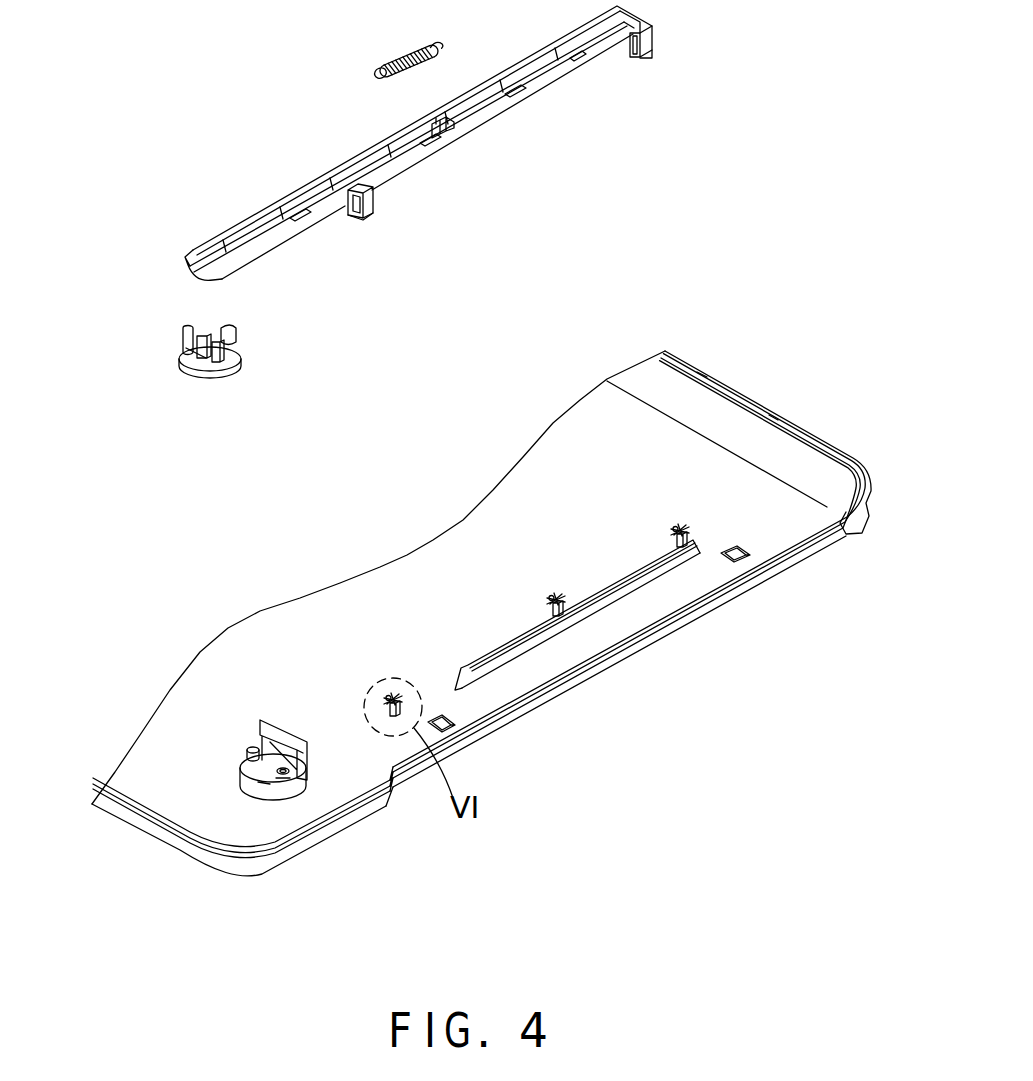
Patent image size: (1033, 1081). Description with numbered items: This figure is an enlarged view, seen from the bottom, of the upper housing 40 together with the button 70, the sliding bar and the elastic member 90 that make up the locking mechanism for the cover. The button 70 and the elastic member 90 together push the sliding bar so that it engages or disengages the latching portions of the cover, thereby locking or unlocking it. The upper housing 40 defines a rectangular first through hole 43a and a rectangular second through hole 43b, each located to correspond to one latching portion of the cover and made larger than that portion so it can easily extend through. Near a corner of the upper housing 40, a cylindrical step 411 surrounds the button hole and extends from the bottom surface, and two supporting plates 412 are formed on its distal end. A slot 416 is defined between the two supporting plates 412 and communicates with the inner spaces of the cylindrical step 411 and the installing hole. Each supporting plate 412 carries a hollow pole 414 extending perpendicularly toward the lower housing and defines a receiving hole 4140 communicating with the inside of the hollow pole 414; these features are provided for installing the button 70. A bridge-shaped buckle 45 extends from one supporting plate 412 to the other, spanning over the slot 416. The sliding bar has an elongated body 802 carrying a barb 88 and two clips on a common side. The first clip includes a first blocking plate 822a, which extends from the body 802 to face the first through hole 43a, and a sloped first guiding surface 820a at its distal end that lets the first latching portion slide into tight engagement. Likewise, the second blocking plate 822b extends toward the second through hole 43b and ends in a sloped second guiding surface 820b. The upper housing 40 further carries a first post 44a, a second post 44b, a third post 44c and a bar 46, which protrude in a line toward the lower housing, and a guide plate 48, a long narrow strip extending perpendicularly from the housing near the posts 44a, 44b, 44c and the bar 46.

The upper housing 40 is at (680, 447).
The cylindrical step 411 is at (266, 790).
The supporting plate 412 is at (242, 766).
The hollow pole 414 is at (280, 782).
The receiving hole 4140 is at (290, 782).
The slot 416 is at (250, 772).
The first through hole 43a is at (748, 561).
The second through hole 43b is at (470, 736).
The first post 44a is at (672, 533).
The second post 44b is at (550, 600).
The third post 44c is at (385, 690).
The buckle 45 is at (283, 738).
The bar 46 is at (487, 643).
The guide plate 48 is at (593, 603).
The button 70 is at (205, 375).
The elongated body 802 is at (528, 90).
The first guiding surface 820a is at (637, 62).
The second guiding surface 820b is at (362, 225).
The first blocking plate 822a is at (641, 40).
The second blocking plate 822b is at (345, 215).
The barb 88 is at (452, 132).
The elastic member 90 is at (410, 62).